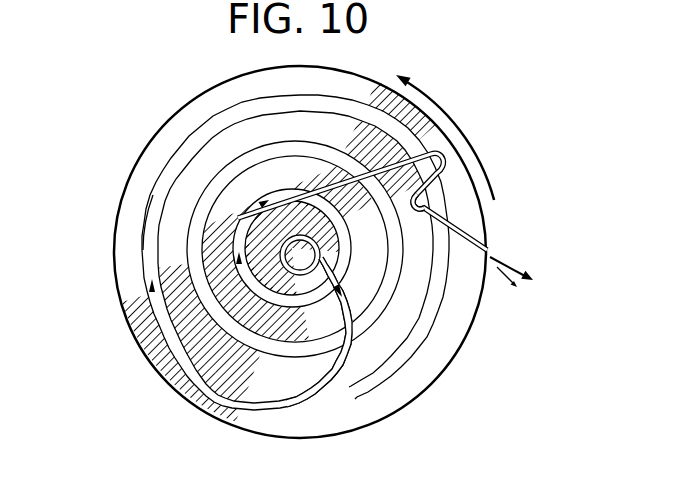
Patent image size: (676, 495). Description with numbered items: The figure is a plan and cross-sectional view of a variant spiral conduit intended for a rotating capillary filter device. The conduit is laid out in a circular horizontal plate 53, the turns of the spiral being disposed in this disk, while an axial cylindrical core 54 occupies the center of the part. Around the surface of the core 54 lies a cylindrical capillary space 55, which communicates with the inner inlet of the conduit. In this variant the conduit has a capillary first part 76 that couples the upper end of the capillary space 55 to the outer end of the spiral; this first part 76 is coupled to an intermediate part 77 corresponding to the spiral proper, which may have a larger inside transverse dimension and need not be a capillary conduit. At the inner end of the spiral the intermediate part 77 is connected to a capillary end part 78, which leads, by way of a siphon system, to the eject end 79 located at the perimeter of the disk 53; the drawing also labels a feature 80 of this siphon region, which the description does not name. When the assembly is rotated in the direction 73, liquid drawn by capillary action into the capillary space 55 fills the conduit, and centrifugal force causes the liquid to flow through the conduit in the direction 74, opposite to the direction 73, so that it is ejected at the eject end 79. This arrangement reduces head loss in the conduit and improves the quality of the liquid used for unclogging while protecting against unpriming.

The circular horizontal plate 53 is at (137, 307).
The axial cylindrical core 54 is at (287, 240).
The cylindrical capillary space 55 is at (320, 250).
The direction of rotation 73 is at (467, 130).
The direction of liquid flow 74 is at (135, 353).
The capillary first part 76 is at (243, 403).
The intermediate part 77 is at (153, 207).
The capillary end part 78 is at (350, 178).
The eject end 79 is at (487, 250).
The kink 80 is at (422, 205).